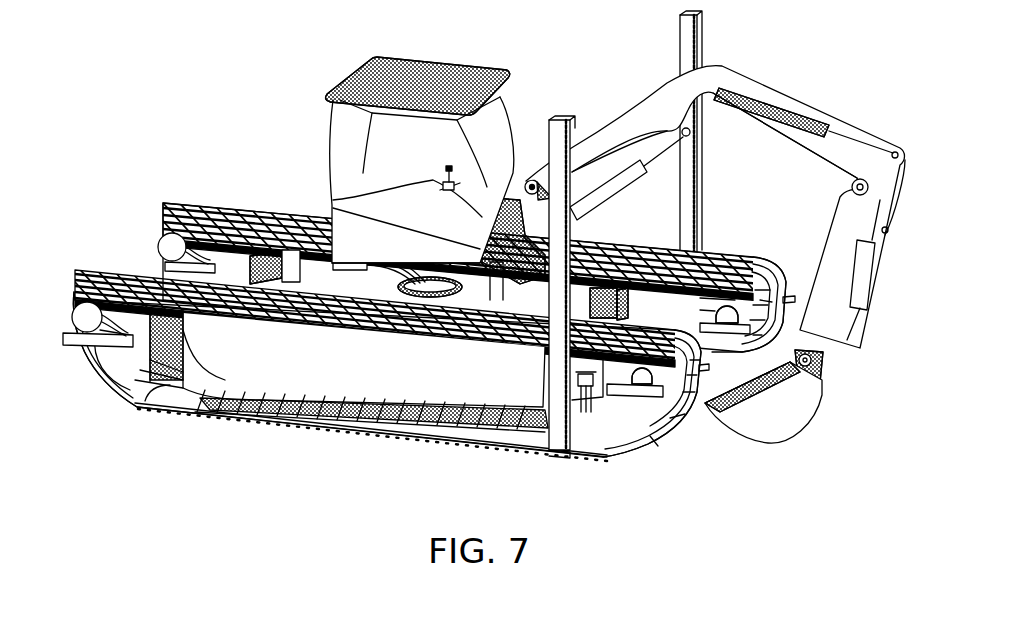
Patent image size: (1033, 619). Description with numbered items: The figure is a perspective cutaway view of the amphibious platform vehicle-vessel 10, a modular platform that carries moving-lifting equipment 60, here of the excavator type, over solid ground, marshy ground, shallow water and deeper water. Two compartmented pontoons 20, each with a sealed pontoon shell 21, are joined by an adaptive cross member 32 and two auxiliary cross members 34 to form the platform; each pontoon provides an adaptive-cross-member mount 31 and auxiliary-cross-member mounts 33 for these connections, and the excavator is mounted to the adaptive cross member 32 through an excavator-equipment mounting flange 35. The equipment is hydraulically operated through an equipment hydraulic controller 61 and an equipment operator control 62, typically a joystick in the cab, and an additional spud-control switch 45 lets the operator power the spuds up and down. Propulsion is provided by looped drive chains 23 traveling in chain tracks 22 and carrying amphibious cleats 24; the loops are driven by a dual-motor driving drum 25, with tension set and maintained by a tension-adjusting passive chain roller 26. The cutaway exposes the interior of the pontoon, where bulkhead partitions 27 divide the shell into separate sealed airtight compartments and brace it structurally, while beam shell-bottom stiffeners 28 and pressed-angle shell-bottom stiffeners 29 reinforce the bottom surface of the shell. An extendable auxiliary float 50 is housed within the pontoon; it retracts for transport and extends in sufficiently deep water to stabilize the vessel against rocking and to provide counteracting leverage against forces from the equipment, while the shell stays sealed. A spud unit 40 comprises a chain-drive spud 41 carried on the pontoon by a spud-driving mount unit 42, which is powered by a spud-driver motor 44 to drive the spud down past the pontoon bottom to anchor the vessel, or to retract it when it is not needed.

The amphibious platform vehicle-vessel 10 is at (130, 42).
The compartmented pontoon 20 is at (140, 168).
The sealed pontoon shell 21 is at (90, 358).
The chain track 22 is at (95, 378).
The drive chain 23 is at (283, 208).
The amphibious cleat 24 is at (297, 210).
The dual-motor driving drum 25 is at (215, 203).
The tension-adjusting passive chain roller 26 is at (725, 320).
The bulkhead partition 27 is at (143, 405).
The beam shell-bottom stiffener 28 is at (357, 432).
The pressed-angle shell-bottom stiffener 29 is at (250, 418).
The adaptive-cross-member mount 31 is at (500, 288).
The adaptive cross member 32 is at (485, 283).
The auxiliary-cross-member mount 33 is at (300, 268).
The auxiliary cross member 34 is at (265, 263).
The excavator-equipment mounting flange 35 is at (455, 280).
The spud unit 40 is at (710, 195).
The chain-drive spud 41 is at (555, 450).
The spud-driving mount unit 42 is at (552, 388).
The spud-driver motor 44 is at (590, 403).
The spud-control switch 45 is at (447, 175).
The extendable auxiliary float 50 is at (381, 379).
The moving-lifting equipment 60 is at (622, 72).
The equipment hydraulic controller 61 is at (340, 245).
The equipment operator control 62 is at (440, 190).